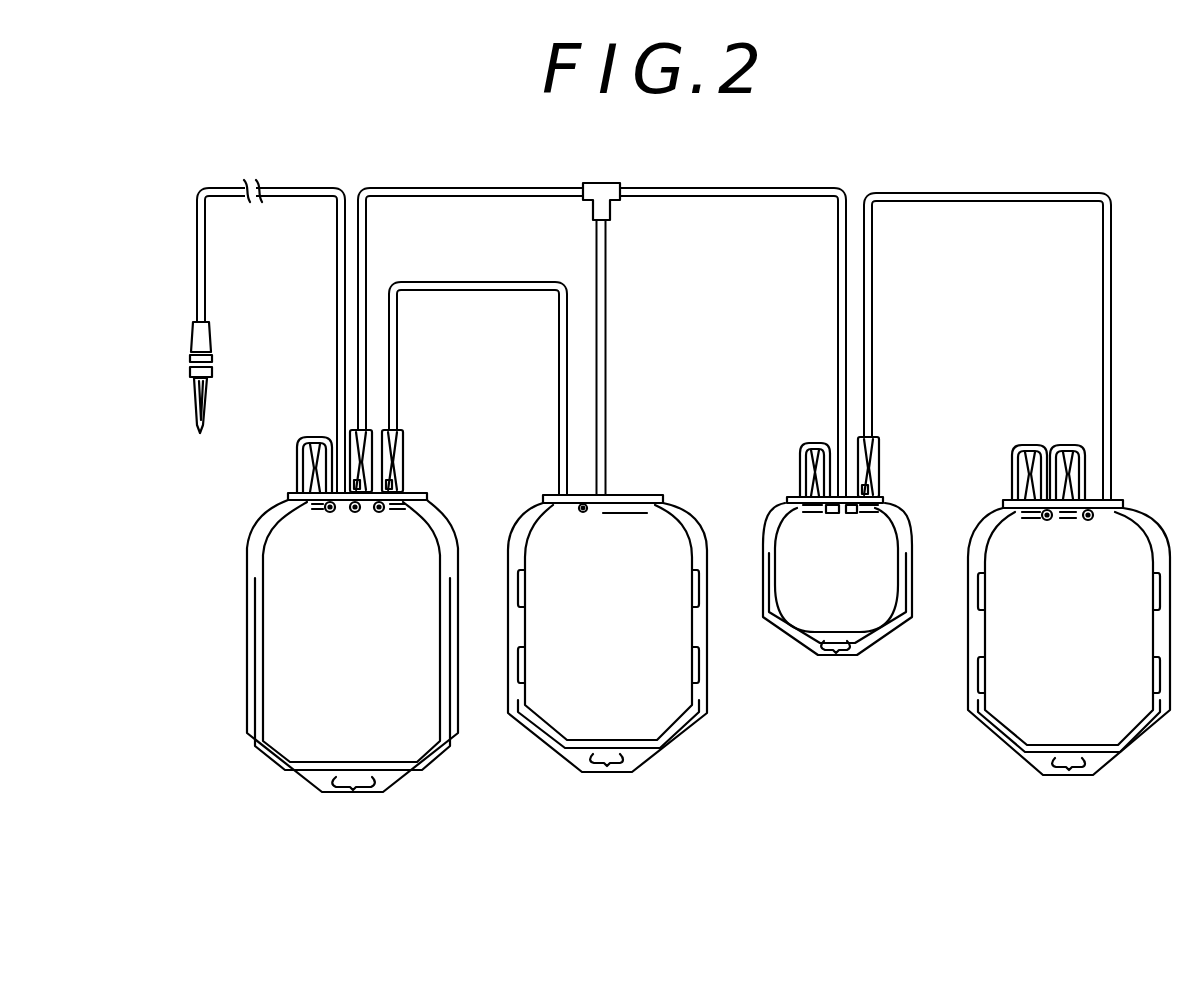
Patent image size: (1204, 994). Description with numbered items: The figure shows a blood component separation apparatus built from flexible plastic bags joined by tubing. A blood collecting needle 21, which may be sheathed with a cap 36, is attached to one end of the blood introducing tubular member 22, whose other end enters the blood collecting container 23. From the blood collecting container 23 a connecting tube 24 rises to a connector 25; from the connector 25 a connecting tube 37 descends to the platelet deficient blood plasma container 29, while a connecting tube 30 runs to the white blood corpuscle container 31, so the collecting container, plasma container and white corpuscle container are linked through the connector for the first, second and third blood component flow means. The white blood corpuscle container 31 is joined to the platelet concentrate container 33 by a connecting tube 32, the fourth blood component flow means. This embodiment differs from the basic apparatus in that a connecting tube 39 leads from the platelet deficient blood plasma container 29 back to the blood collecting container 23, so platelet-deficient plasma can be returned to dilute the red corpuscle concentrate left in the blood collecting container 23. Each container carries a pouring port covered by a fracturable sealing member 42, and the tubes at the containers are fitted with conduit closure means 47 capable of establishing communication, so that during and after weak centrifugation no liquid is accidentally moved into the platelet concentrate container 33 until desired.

The blood collecting needle 21 is at (209, 396).
The blood introducing tubular member 22 is at (295, 193).
The blood collecting container 23 is at (290, 727).
The connecting tube 24 is at (482, 193).
The connector 25 is at (608, 197).
The platelet deficient blood plasma container 29 is at (555, 717).
The connecting tube 30 is at (758, 194).
The white blood corpuscle container 31 is at (805, 612).
The connecting tube 32 is at (983, 204).
The platelet concentrate container 33 is at (1015, 722).
The cap 36 is at (196, 417).
The tube 37 is at (607, 295).
The connecting tube 39 is at (478, 289).
The fracturable sealing member 42 is at (312, 440).
The conduit closure means 47 is at (372, 463).